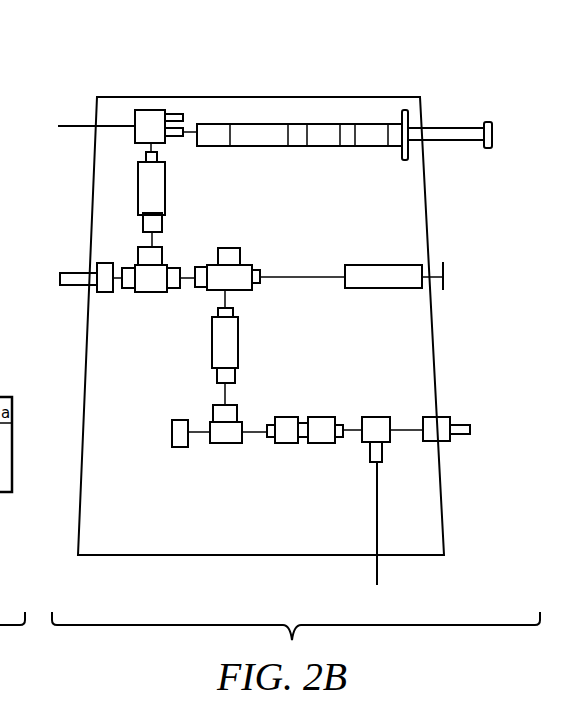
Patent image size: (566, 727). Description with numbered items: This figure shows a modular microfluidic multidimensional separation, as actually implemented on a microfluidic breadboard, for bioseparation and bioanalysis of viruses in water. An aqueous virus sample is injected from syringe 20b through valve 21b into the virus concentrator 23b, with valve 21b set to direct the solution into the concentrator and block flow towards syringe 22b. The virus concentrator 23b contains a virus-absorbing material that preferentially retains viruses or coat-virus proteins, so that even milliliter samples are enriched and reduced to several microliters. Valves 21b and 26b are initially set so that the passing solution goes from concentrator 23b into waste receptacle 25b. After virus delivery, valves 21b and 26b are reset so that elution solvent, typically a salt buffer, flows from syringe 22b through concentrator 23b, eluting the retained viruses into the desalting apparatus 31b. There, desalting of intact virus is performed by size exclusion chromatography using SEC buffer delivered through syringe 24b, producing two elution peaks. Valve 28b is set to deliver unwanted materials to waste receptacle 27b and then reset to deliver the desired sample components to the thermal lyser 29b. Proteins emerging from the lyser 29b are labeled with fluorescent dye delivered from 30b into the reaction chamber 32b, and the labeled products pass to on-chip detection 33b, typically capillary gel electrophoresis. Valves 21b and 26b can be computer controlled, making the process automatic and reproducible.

The syringe 20b is at (335, 125).
The valve 21b is at (150, 110).
The syringe 22b is at (88, 125).
The virus concentrator 23b is at (150, 188).
The syringe 24b is at (385, 265).
The waste receptacle 25b is at (80, 273).
The valve 26b is at (157, 272).
The waste receptacle 27b is at (170, 432).
The valve 28b is at (225, 443).
The thermal lyser 29b is at (328, 443).
The fluorescent dye delivery 30b is at (379, 522).
The desalting apparatus 31b is at (238, 362).
The reaction chamber 32b is at (392, 438).
The on-chip detection 33b is at (458, 423).